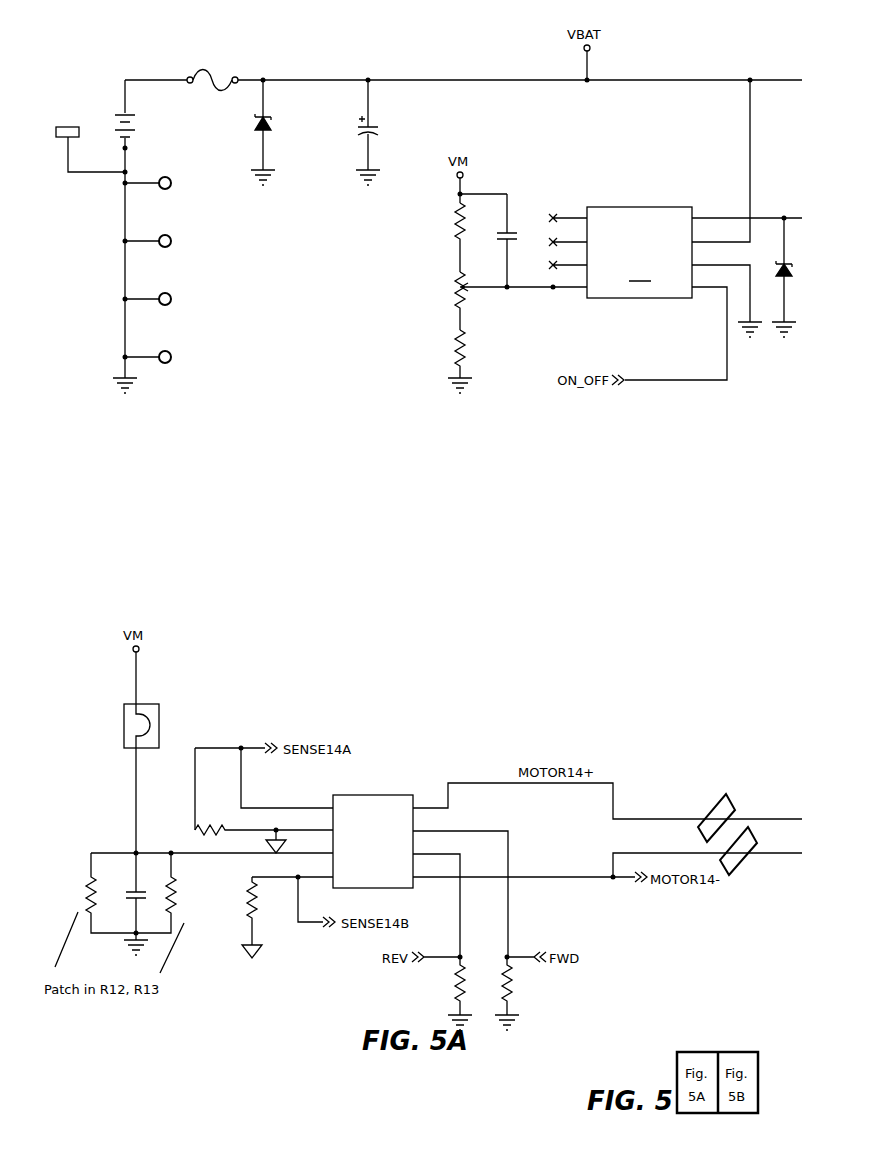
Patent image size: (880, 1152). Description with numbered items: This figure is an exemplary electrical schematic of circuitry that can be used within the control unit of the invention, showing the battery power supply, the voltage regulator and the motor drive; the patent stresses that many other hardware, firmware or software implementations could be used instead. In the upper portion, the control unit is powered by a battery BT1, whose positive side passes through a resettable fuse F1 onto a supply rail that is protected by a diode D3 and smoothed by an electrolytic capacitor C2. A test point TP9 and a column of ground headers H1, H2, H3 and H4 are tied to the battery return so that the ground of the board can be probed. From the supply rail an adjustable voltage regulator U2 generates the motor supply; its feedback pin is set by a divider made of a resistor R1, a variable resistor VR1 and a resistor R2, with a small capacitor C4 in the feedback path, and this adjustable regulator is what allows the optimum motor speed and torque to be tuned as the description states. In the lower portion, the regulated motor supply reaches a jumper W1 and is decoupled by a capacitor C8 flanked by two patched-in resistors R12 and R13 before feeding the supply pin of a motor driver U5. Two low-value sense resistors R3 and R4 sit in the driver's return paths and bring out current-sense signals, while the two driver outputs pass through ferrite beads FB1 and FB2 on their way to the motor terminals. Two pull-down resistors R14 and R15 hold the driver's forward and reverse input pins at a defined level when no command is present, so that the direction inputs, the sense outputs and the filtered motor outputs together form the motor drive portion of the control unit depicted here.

The fuse 500mA reset F1 is at (243, 68).
The 9V battery BT1 is at (140, 229).
The test point TP9 is at (88, 140).
The ground test point header H1 is at (163, 185).
The ground test point header H2 is at (163, 243).
The ground test point header H3 is at (163, 301).
The ground test point header H4 is at (163, 359).
The SS13 diode D3 is at (284, 132).
The 220uF 16V capacitor C2 is at (391, 132).
The 3.32K resistor R1 is at (440, 236).
The 2K ohm variable resistor VR1 is at (497, 301).
The 1K resistor R2 is at (453, 361).
The 1000pF capacitor C4 is at (526, 240).
The LM2594-ADJ regulator U2 is at (675, 230).
The jumper W1 is at (114, 729).
The 4.7uF capacitor C8 is at (121, 916).
The 330 ohm resistor R12 is at (94, 893).
The 330 ohm resistor R13 is at (171, 893).
The 6.2 ohm resistor R3 is at (264, 831).
The 6.2 ohm resistor R4 is at (270, 917).
The S19987 motor driver U5 is at (372, 829).
The ferrite bead 1K FB1 is at (730, 817).
The ferrite bead 1K FB2 is at (760, 856).
The 10K resistor R14 is at (449, 993).
The 10K resistor R15 is at (518, 993).